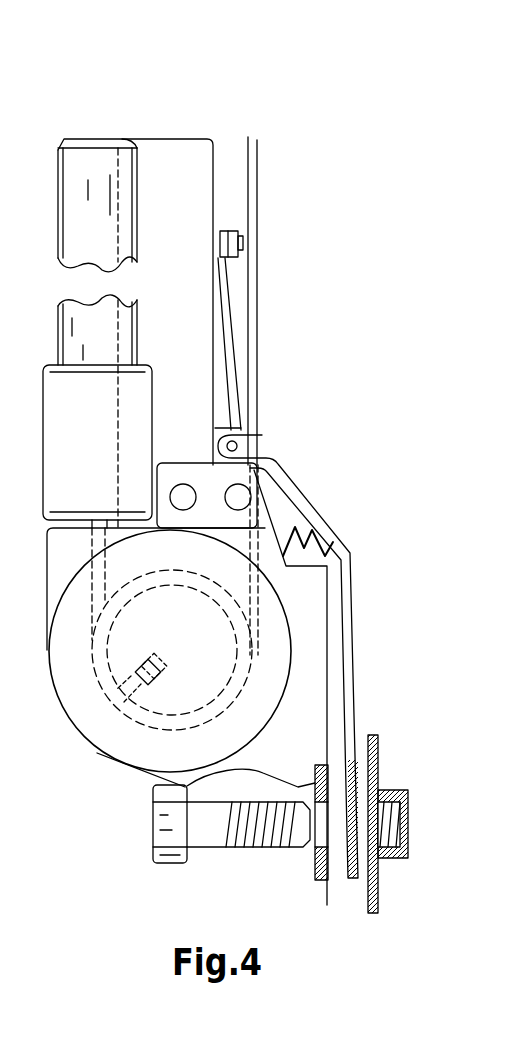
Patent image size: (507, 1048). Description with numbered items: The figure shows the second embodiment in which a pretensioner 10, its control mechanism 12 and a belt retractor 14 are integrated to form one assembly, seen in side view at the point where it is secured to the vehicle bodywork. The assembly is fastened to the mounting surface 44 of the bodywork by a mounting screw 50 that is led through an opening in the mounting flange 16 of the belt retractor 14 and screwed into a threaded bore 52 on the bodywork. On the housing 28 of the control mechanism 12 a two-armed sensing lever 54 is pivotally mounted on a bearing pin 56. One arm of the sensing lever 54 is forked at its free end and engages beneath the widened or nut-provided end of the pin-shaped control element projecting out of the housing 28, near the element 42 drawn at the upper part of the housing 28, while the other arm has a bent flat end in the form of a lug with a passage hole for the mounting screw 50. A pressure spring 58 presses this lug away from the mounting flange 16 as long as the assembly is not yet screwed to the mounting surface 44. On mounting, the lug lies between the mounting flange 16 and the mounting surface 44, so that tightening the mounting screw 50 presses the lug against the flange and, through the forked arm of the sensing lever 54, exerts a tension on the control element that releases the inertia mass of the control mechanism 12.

The pretensioner 10 is at (41, 433).
The control mechanism 12 is at (220, 137).
The belt retractor 14 is at (106, 763).
The mounting flange 16 is at (328, 886).
The housing 28 is at (200, 194).
The adjustment bolt 42 is at (240, 234).
The mounting surface 44 is at (379, 892).
The mounting screw 50 is at (262, 848).
The threaded bore 52 is at (400, 825).
The sensing lever 54 is at (300, 483).
The bearing pin 56 is at (248, 446).
The pressure spring 58 is at (340, 549).